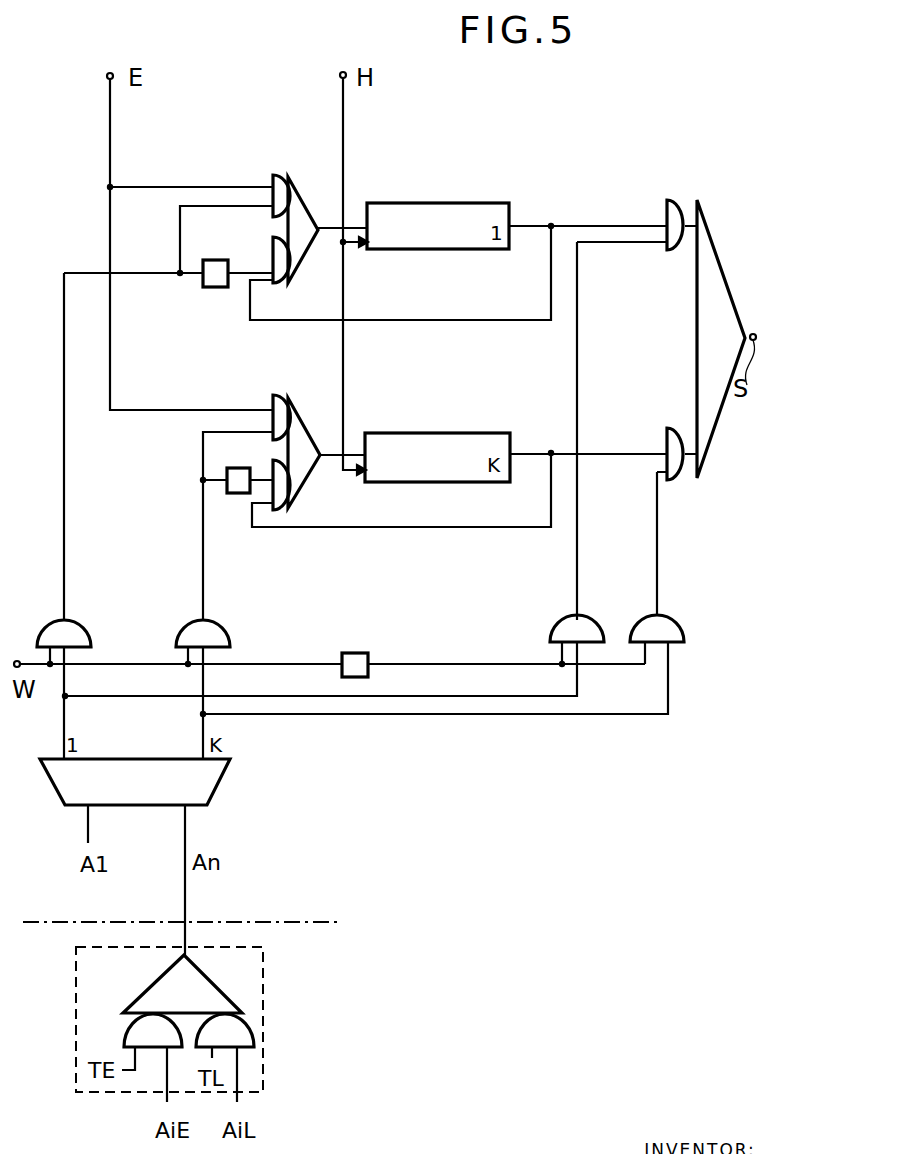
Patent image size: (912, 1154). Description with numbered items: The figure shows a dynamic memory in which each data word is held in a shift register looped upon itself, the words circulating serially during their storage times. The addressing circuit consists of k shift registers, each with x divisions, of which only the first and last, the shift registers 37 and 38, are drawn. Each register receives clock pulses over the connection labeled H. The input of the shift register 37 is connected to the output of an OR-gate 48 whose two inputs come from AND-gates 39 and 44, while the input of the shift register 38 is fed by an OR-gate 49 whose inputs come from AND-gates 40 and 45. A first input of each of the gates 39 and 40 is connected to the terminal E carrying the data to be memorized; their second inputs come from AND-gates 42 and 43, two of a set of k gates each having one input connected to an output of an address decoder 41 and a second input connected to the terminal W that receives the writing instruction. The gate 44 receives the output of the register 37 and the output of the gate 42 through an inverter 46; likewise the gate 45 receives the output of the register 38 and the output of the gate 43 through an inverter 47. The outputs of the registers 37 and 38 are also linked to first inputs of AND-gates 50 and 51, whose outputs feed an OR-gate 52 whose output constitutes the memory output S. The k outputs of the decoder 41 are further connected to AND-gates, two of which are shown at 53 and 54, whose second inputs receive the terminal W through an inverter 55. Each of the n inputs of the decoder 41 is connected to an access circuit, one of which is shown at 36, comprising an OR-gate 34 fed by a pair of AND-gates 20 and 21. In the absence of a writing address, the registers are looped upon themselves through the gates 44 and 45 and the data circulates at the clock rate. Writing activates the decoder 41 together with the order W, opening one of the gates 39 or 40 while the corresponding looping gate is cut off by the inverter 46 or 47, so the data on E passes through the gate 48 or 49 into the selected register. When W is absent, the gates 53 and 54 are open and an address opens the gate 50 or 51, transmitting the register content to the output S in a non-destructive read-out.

The AND-gate 20 is at (142, 1033).
The AND-gate 21 is at (245, 1032).
The OR-gate 34 is at (168, 993).
The access circuit 36 is at (250, 975).
The shift register 37 is at (427, 218).
The shift register 38 is at (460, 445).
The AND-gate 39 is at (274, 174).
The AND-gate 40 is at (275, 395).
The address decoder 41 is at (205, 787).
The AND-gate 42 is at (72, 635).
The AND-gate 43 is at (212, 635).
The AND-gate 44 is at (278, 258).
The AND-gate 45 is at (278, 473).
The inverter 46 is at (220, 278).
The inverter 47 is at (232, 493).
The OR-gate 48 is at (303, 218).
The OR-gate 49 is at (302, 430).
The AND-gate 50 is at (672, 217).
The AND-gate 51 is at (677, 463).
The OR-gate 52 is at (712, 238).
The AND-gate 53 is at (583, 630).
The AND-gate 54 is at (667, 632).
The inverter 55 is at (352, 665).